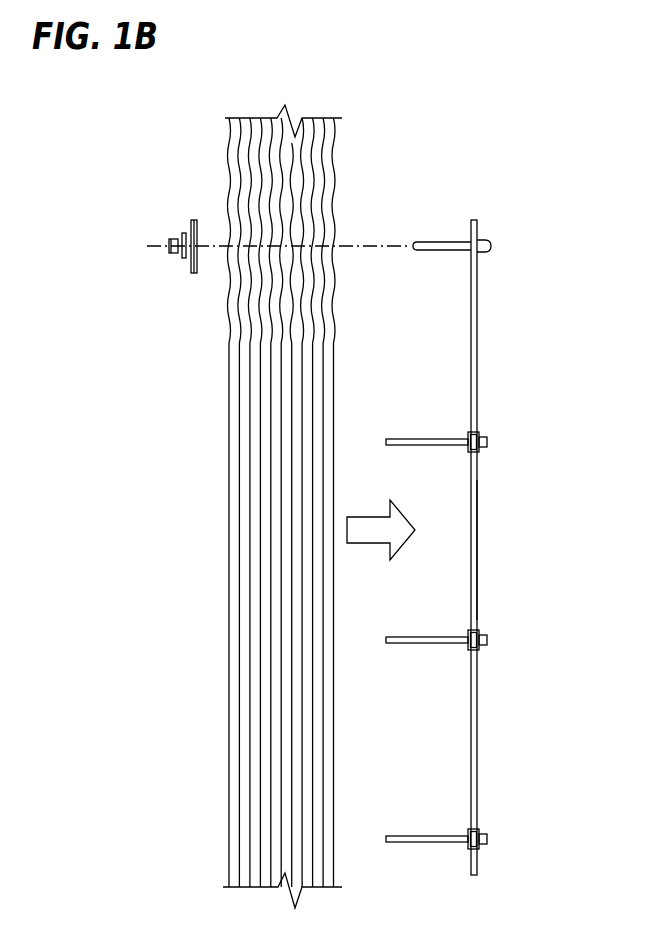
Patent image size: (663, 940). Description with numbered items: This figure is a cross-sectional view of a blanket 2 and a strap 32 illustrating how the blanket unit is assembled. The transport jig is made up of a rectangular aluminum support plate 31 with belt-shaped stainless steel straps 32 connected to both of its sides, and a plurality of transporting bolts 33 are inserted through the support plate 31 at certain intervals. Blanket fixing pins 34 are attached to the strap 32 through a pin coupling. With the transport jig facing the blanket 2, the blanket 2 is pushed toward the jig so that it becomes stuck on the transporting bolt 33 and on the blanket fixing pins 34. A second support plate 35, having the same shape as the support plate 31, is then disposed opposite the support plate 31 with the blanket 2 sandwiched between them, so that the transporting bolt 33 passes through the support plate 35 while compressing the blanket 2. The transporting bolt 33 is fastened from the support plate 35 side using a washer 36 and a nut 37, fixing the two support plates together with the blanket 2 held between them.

The blanket 2 is at (229, 581).
The support plate 31 is at (474, 220).
The strap 32 is at (477, 557).
The transporting bolt 33 is at (434, 241).
The blanket fixing pin 34 is at (418, 439).
The support plate 35 is at (196, 221).
The washer 36 is at (182, 258).
The nut 37 is at (168, 241).